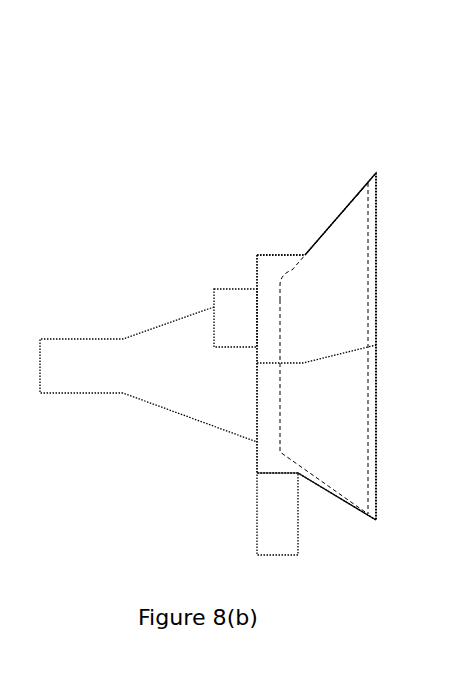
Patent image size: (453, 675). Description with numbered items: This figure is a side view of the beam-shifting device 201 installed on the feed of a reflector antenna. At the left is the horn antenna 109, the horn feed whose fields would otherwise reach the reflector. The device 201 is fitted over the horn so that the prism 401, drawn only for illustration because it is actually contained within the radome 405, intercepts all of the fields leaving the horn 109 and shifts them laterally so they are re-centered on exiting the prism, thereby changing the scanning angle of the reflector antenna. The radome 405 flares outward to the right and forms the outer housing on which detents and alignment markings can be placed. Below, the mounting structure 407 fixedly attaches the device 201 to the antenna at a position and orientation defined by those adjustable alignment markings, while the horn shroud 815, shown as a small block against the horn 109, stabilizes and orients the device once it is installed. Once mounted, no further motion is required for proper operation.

The device 201 is at (253, 180).
The prism 401 is at (312, 264).
The radome 405 is at (376, 220).
The horn shroud 815 is at (222, 288).
The horn antenna 109 is at (165, 405).
The mounting structure 407 is at (257, 482).